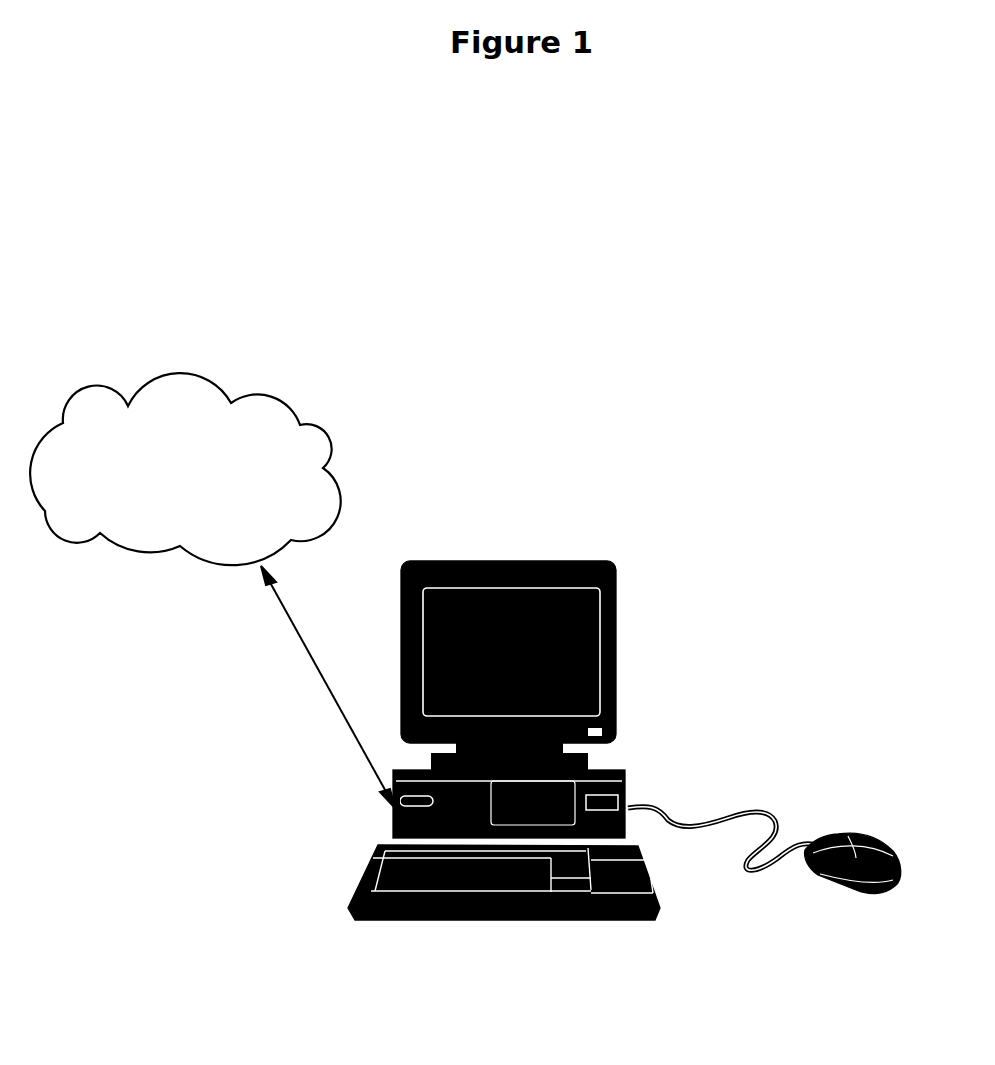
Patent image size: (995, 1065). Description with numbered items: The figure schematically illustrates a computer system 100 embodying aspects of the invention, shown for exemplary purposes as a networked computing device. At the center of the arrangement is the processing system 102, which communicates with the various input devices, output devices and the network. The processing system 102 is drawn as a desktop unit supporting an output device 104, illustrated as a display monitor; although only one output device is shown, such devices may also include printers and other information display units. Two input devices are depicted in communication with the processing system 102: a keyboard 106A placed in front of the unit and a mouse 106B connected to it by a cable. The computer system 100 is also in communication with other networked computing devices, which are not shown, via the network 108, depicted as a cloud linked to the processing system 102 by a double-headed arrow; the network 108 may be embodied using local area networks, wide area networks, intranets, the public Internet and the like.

The computer system 100 is at (655, 438).
The processing system 102 is at (618, 773).
The output device 104 is at (613, 603).
The keyboard 106A is at (547, 910).
The mouse 106B is at (813, 867).
The network 108 is at (185, 469).